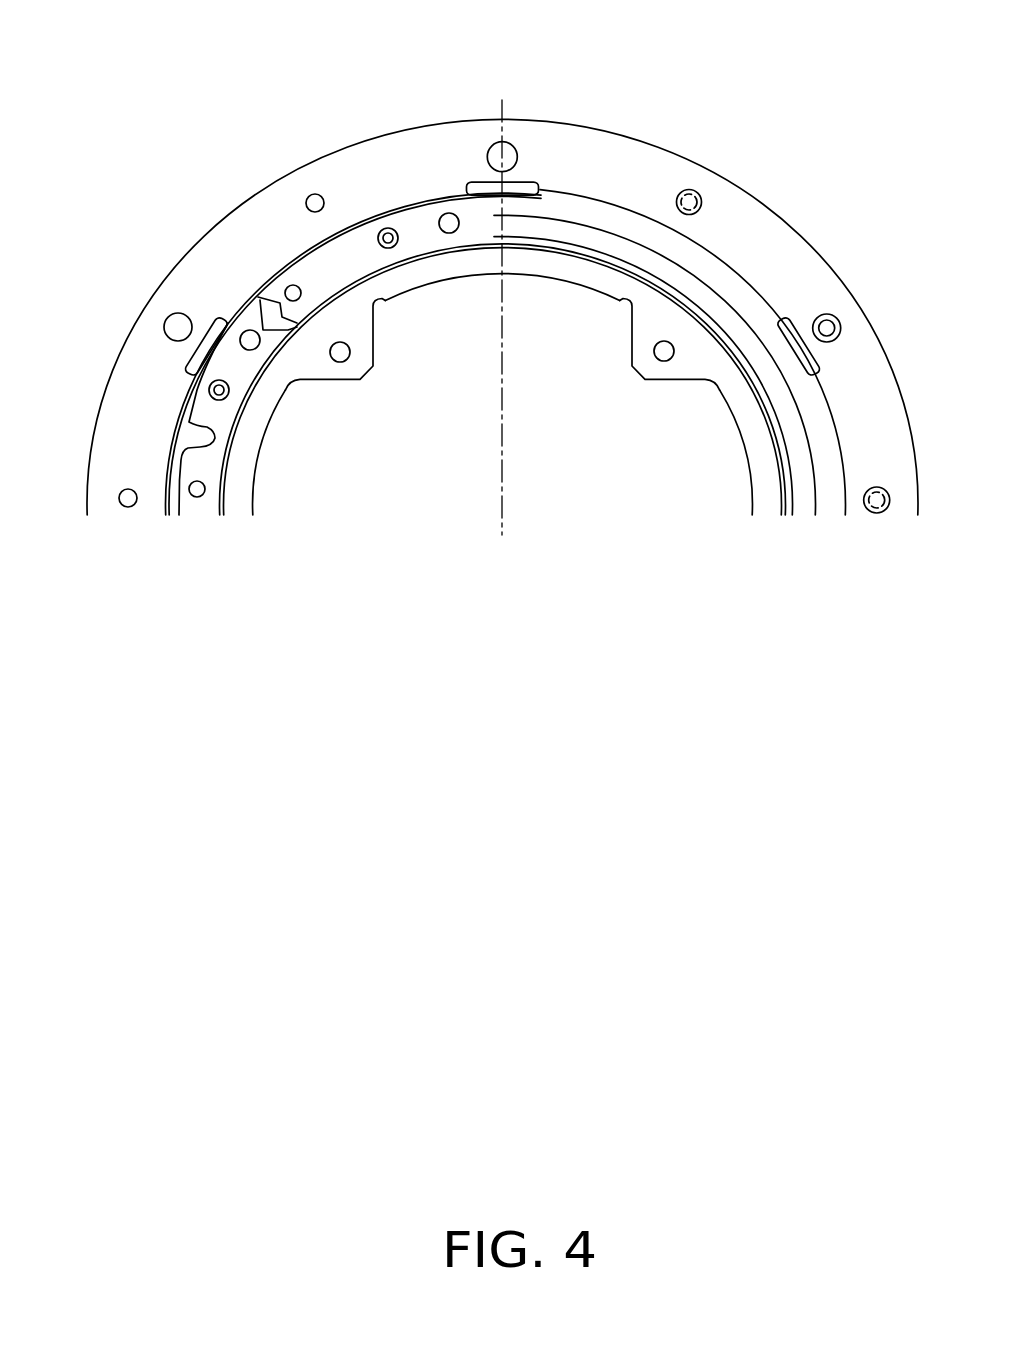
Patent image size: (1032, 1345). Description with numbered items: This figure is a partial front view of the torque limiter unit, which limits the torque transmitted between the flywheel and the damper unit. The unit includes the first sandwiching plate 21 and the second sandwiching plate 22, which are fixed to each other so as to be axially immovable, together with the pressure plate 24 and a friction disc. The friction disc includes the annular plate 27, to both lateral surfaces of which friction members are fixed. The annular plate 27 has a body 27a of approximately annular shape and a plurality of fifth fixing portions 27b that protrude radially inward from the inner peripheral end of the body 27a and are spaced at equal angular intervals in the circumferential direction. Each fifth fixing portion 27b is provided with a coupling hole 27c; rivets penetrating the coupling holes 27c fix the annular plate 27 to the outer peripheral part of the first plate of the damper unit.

The first sandwiching plate 21 is at (243, 218).
The second sandwiching plate 22 is at (643, 150).
The pressure plate 24 is at (358, 236).
The annular plate 27 is at (483, 283).
The body 27a is at (200, 418).
The fifth fixing portion 27b is at (333, 372).
The coupling hole 27c is at (349, 356).